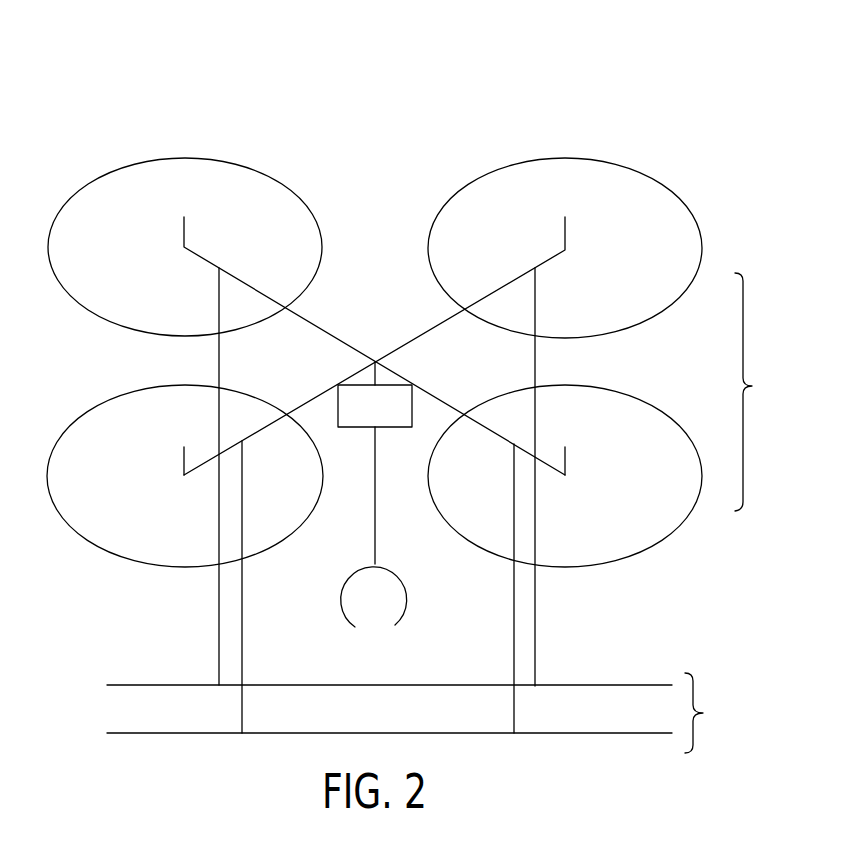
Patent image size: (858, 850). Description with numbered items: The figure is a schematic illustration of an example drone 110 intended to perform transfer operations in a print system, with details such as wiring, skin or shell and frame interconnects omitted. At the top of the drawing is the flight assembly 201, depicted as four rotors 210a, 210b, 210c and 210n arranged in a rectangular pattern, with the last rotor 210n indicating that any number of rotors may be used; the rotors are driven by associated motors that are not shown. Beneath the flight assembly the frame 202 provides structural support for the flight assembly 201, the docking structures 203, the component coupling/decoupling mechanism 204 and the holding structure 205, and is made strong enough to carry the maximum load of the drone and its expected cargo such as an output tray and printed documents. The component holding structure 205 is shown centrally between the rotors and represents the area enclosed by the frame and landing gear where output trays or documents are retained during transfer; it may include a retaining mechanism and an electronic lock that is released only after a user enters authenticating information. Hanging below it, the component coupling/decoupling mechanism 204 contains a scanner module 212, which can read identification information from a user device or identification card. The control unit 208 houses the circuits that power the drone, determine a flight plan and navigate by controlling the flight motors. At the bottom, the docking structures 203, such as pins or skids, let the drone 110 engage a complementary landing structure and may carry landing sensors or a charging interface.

The drone 110 is at (128, 91).
The flight assembly 201 is at (761, 392).
The frame 202 is at (218, 615).
The docking structure 203 is at (422, 713).
The component coupling/decoupling mechanism 204 is at (342, 527).
The component holding structure 205 is at (390, 420).
The control unit 208 is at (535, 630).
The rotor 210a is at (195, 158).
The rotor 210b is at (565, 158).
The rotor 210c is at (685, 514).
The rotor 210n is at (63, 514).
The scanner module 212 is at (374, 597).